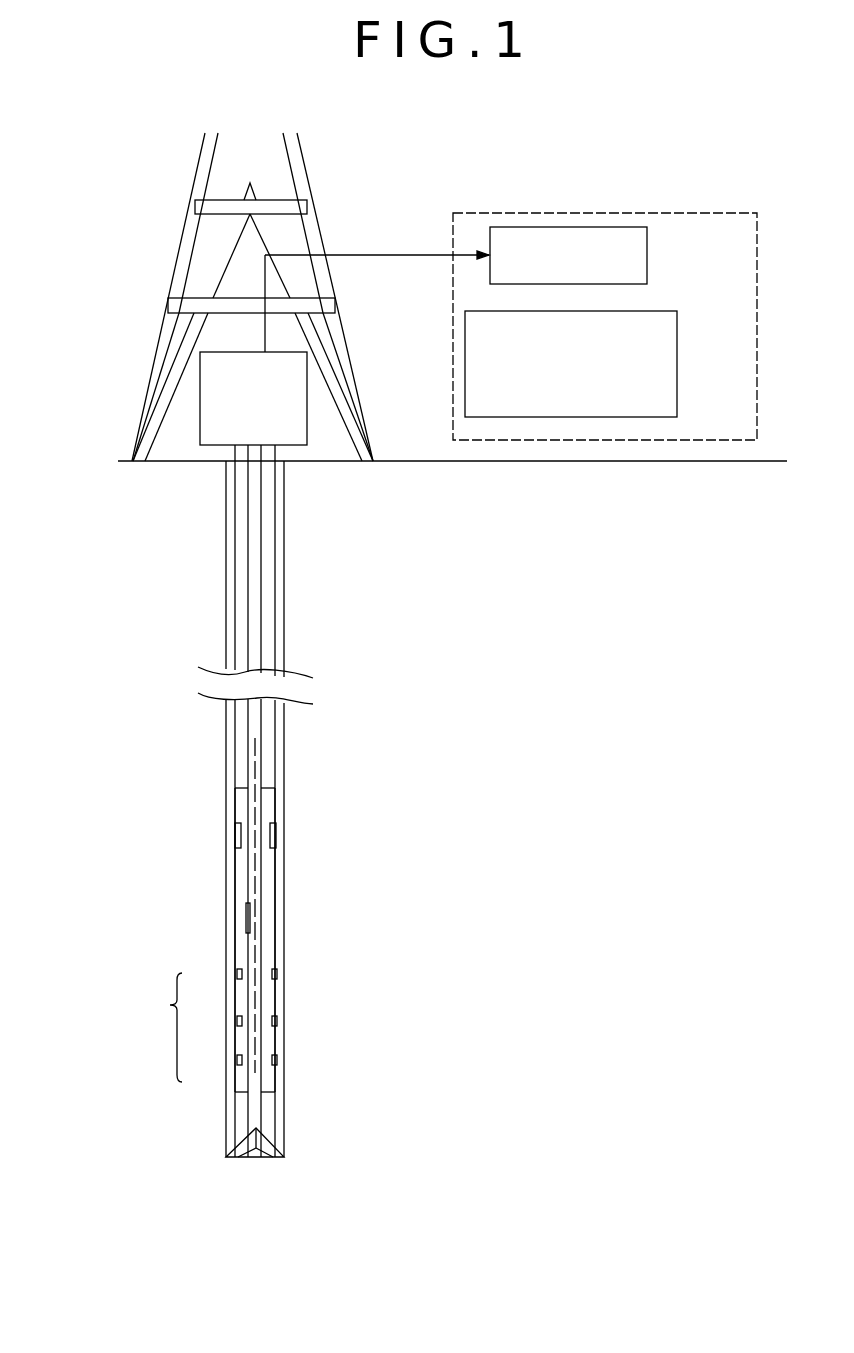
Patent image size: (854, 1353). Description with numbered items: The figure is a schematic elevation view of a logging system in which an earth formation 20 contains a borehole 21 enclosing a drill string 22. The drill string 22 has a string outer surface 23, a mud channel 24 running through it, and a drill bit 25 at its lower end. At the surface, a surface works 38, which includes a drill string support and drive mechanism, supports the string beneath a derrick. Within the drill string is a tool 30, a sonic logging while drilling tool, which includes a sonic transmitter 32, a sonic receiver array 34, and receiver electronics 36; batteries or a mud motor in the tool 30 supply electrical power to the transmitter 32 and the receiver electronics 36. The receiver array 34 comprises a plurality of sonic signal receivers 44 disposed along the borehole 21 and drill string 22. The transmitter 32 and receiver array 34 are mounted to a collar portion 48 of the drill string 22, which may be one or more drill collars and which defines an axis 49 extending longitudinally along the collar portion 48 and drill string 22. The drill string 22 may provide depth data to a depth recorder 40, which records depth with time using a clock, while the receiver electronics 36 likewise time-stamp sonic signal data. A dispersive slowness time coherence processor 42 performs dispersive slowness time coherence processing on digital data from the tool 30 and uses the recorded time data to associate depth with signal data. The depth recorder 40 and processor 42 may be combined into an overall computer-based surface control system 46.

The earth formation 20 is at (440, 556).
The borehole 21 is at (227, 528).
The drill string 22 is at (262, 563).
The string outer surface 23 is at (237, 608).
The mud channel 24 is at (258, 660).
The drill bit 25 is at (238, 1142).
The tool 30 is at (132, 782).
The sonic transmitter 32 is at (237, 832).
The sonic receiver array 34 is at (161, 1027).
The receiver electronics 36 is at (235, 920).
The surface works 38 is at (200, 388).
The depth recorder 40 is at (647, 250).
The dispersive slowness time coherence processor 42 is at (677, 362).
The sonic signal receivers 44 is at (237, 1060).
The surface control system 46 is at (480, 213).
The collar portion 48 is at (278, 933).
The axis 49 is at (258, 880).